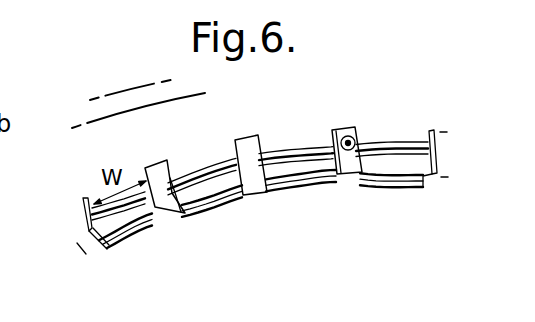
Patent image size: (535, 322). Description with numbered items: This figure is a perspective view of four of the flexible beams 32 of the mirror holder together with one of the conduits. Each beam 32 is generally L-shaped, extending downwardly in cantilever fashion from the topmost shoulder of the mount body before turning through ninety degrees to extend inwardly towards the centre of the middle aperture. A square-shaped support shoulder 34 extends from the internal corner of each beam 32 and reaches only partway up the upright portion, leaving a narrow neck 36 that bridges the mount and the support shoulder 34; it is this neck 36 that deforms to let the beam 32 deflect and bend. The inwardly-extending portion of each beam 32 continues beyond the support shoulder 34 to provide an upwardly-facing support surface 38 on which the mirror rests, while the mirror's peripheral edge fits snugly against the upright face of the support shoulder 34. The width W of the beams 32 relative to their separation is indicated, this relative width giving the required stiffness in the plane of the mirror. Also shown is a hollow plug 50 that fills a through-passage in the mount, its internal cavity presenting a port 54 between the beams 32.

The flexible beam 32 is at (144, 248).
The support shoulder 34 is at (80, 248).
The neck 36 is at (83, 210).
The support surface 38 is at (153, 213).
The hollow plug 50 is at (333, 130).
The port 54 is at (353, 137).